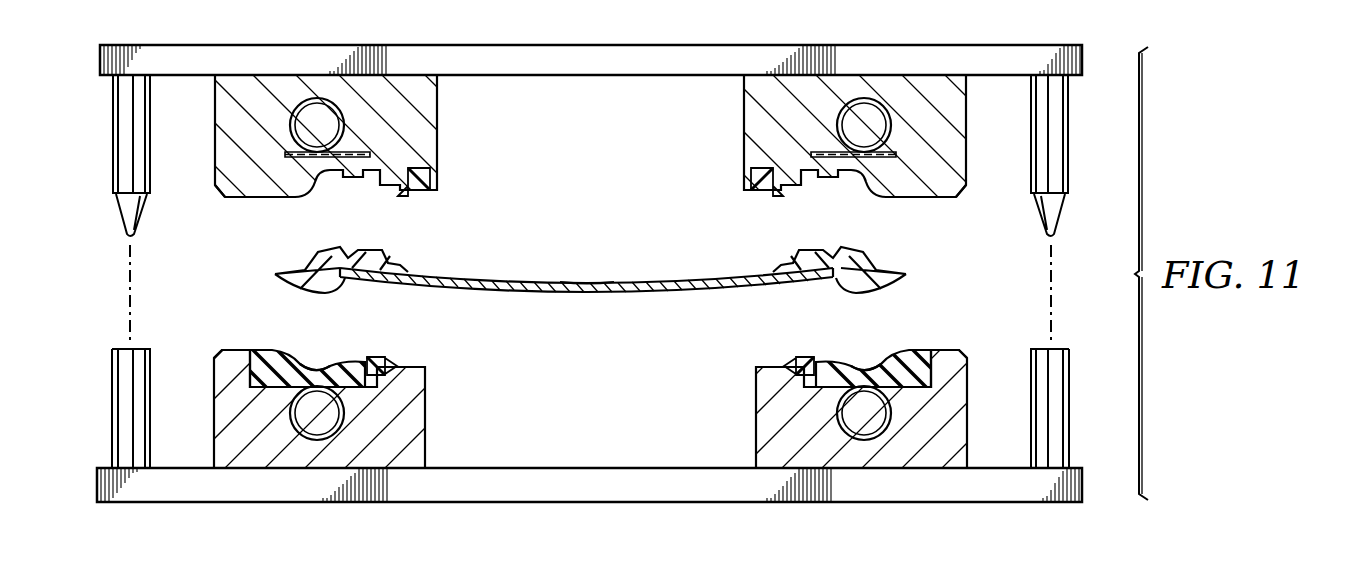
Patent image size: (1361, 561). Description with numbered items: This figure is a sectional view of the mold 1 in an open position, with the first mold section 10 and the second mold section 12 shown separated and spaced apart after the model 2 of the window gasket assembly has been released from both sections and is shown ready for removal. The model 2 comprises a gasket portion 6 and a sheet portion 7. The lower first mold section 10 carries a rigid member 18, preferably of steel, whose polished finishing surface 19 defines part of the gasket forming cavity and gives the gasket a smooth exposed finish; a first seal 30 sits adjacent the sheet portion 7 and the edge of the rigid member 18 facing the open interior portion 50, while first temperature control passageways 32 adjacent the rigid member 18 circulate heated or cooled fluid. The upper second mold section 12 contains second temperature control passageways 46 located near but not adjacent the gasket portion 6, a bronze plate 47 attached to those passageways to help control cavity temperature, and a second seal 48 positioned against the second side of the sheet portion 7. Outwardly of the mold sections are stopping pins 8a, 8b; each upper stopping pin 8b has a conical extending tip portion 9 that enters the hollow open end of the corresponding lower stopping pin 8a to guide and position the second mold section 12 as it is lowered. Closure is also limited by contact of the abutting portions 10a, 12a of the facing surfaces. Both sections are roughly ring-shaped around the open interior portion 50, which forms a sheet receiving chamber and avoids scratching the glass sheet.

The mold 1 is at (50, 161).
The model 2 is at (577, 291).
The gasket portion 6 is at (310, 266).
The sheet portion 7 is at (575, 281).
The lower stopping pin 8a is at (112, 408).
The upper stopping pin 8b is at (113, 135).
The extending tip portion 9 is at (122, 214).
The first mold section 10 is at (426, 437).
The abutting portion 10a is at (237, 348).
The second mold section 12 is at (440, 122).
The abutting portion 12a is at (236, 198).
The rigid member 18 is at (254, 348).
The finishing surface 19 is at (355, 360).
The first seal 30 is at (385, 356).
The first temperature control passageways 32 is at (305, 425).
The second temperature control passageways 46 is at (305, 137).
The plate 47 is at (290, 150).
The second seal 48 is at (414, 198).
The open interior portion 50 is at (613, 147).